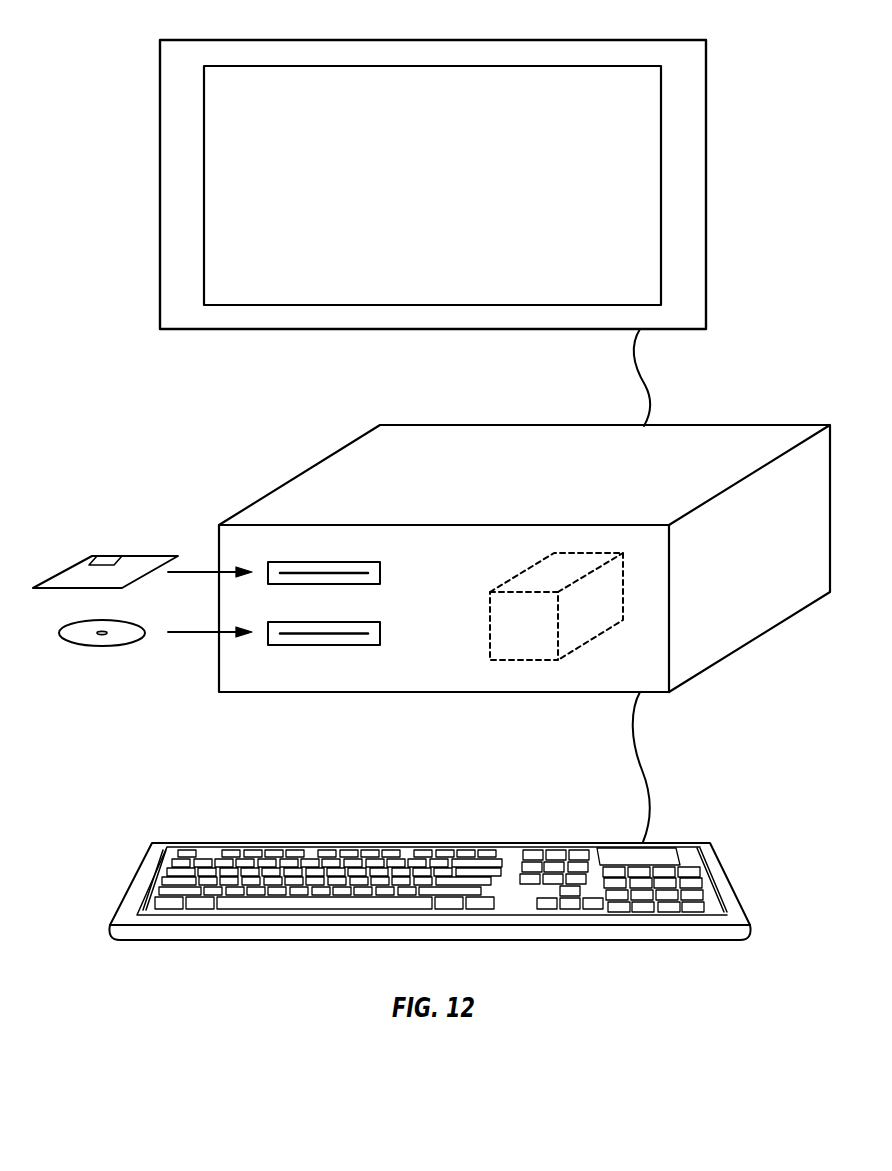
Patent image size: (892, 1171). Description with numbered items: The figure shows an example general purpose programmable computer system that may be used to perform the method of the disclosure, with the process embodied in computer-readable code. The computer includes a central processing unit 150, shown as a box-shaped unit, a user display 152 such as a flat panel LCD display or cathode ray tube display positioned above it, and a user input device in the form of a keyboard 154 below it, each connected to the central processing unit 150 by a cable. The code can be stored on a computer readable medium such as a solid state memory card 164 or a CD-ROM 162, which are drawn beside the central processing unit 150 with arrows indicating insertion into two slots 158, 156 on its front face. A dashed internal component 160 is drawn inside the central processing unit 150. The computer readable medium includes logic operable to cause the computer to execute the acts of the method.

The central processing unit 150 is at (762, 426).
The user display 152 is at (647, 40).
The keyboard 154 is at (690, 842).
The optical disk drive 156 is at (345, 620).
The floppy/memory card drive 158 is at (345, 557).
The processor/memory (internal component) 160 is at (490, 597).
The CD-ROM 162 is at (133, 620).
The solid state memory card 164 is at (137, 556).